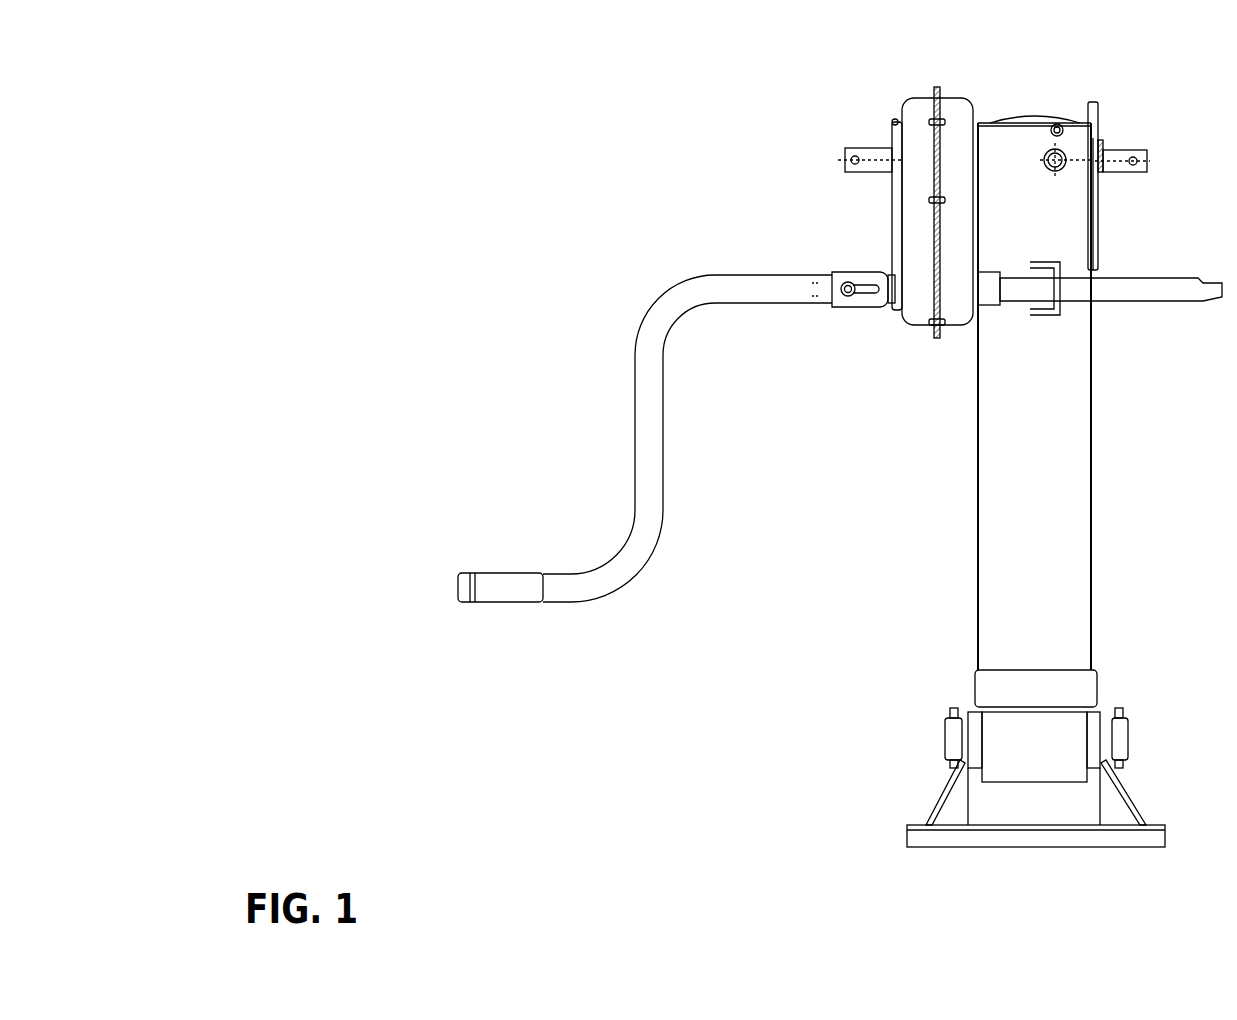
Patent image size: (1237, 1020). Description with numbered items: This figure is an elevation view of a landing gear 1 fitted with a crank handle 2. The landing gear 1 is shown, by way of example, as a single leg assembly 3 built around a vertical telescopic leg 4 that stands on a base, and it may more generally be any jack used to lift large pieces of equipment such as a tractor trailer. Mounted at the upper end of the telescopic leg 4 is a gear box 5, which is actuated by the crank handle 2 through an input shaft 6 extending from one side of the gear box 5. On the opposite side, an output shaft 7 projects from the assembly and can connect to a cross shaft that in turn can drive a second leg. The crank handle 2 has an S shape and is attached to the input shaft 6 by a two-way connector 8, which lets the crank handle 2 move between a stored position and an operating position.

The landing gear 1 is at (407, 88).
The crank handle 2 is at (655, 460).
The single leg assembly 3 is at (1100, 186).
The telescopic leg 4 is at (1075, 480).
The gear box 5 is at (958, 115).
The input shaft 6 is at (886, 273).
The output shaft 7 is at (1133, 147).
The two-way connector 8 is at (845, 272).